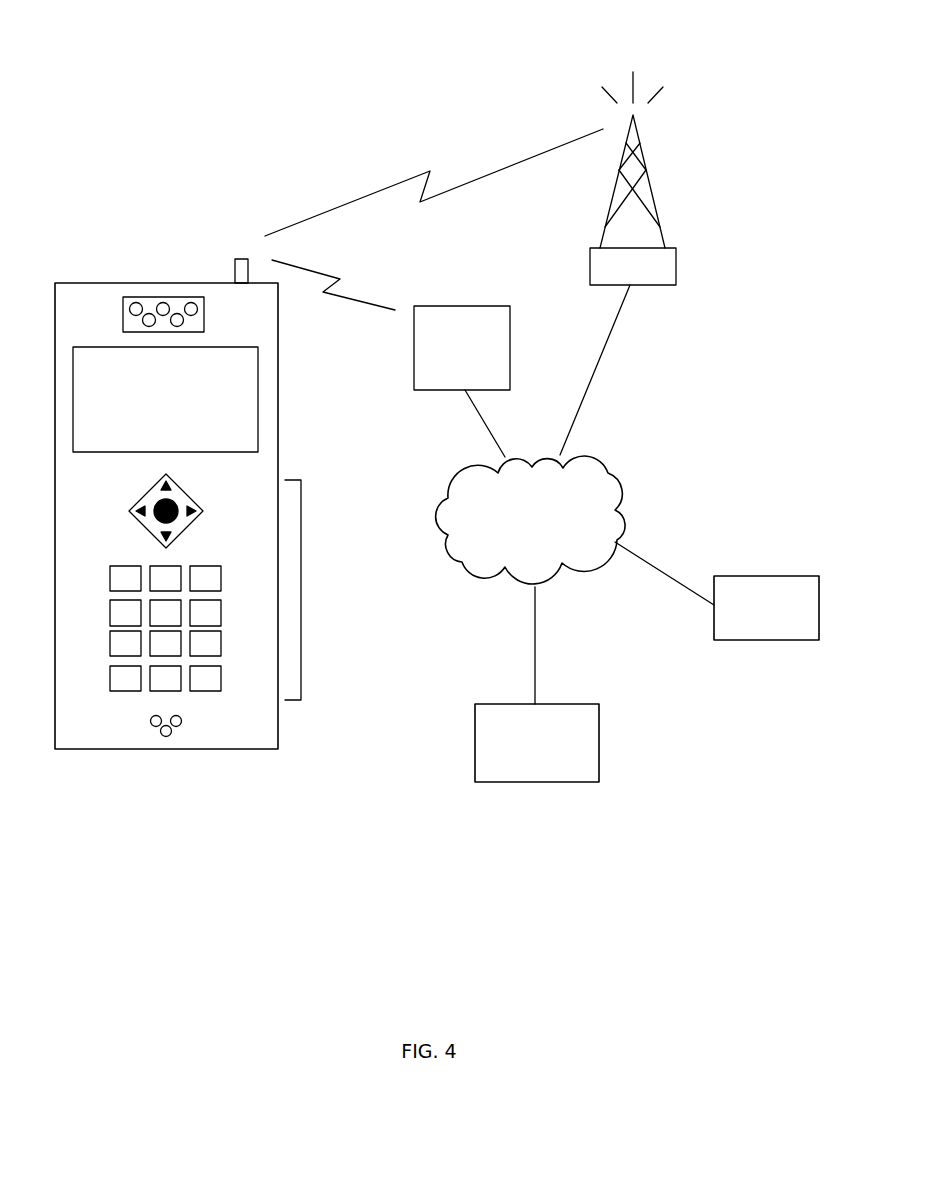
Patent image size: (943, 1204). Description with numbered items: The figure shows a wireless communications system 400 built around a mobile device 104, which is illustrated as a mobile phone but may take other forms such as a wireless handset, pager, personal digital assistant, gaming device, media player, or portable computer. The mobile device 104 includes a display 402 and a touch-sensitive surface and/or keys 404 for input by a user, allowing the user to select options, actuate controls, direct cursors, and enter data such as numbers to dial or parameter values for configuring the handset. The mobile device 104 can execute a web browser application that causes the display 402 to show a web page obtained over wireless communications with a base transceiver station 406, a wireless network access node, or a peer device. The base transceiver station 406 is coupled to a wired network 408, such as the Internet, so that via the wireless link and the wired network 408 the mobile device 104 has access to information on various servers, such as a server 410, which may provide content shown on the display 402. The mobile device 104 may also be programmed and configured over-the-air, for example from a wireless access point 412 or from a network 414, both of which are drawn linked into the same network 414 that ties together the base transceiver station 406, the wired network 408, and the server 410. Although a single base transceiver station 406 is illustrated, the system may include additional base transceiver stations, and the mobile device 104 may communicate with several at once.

The wireless communications system 400 is at (87, 62).
The mobile device 104 is at (72, 283).
The display 402 is at (257, 392).
The keys 404 is at (301, 610).
The base transceiver station 406 is at (676, 259).
The wired network 408 is at (546, 782).
The server 410 is at (738, 640).
The wireless access point 412 is at (465, 306).
The network 414 is at (625, 490).